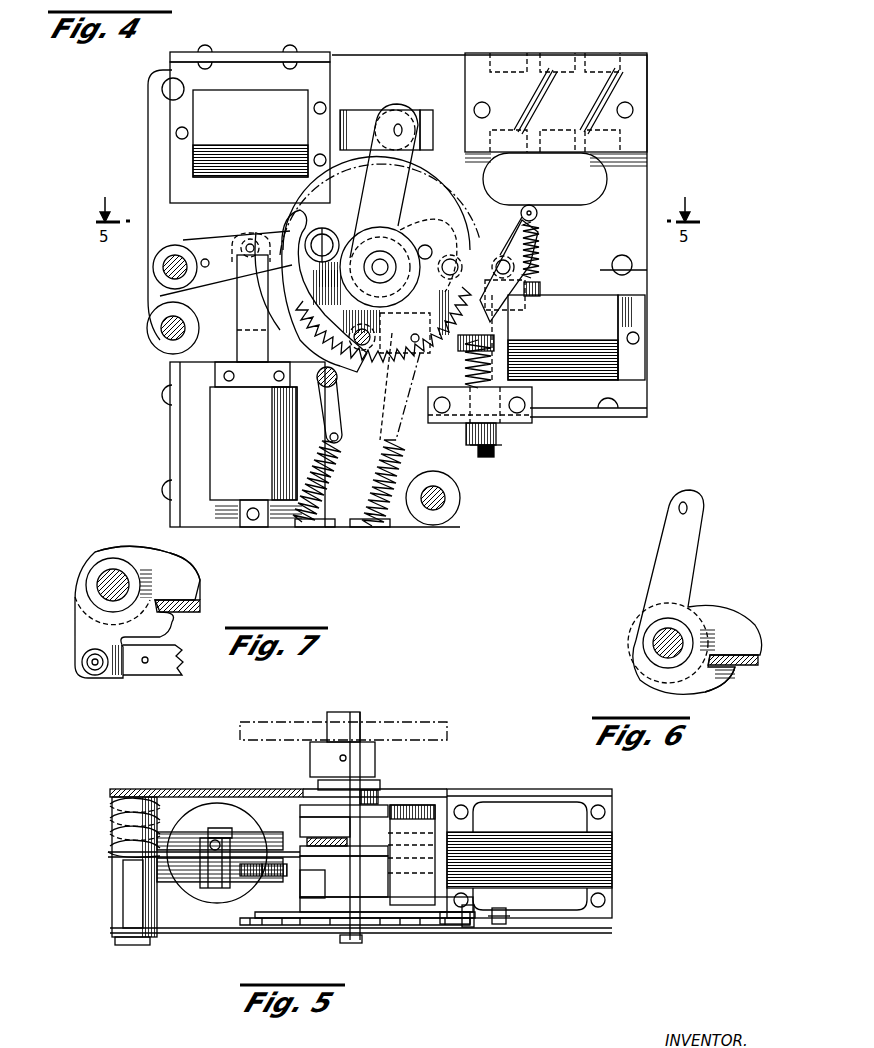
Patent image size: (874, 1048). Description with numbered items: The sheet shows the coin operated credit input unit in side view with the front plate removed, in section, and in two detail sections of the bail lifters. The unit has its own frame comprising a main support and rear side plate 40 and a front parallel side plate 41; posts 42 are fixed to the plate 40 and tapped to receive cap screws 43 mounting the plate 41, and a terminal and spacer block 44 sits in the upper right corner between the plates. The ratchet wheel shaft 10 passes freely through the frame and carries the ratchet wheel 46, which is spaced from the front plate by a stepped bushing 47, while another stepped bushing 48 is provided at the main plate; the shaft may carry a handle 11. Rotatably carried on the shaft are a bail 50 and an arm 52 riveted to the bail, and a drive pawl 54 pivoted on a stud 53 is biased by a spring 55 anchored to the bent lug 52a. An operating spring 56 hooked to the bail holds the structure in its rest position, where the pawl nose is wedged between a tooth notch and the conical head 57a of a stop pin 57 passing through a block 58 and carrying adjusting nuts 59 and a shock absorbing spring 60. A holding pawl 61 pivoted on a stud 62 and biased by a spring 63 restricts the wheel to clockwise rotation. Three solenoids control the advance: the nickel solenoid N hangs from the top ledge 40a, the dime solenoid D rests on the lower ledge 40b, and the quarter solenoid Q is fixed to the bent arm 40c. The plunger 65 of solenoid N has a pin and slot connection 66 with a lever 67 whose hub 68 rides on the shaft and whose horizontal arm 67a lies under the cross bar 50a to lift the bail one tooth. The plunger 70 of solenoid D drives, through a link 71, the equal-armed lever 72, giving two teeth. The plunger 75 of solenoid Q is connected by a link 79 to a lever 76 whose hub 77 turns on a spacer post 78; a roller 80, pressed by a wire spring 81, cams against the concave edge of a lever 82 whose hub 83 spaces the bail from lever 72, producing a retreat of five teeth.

In FIG. 4, the ratchet wheel shaft 10 is at (383, 264).
In FIG. 7, the ratchet wheel shaft 10 is at (98, 585).
In FIG. 6, the ratchet wheel shaft 10 is at (652, 640).
In FIG. 5, the ratchet wheel shaft 10 is at (351, 714).
In FIG. 5, the handle 11 is at (422, 725).
In FIG. 4, the main support and rear side plate 40 is at (446, 55).
In FIG. 5, the main support and rear side plate 40 is at (172, 788).
In FIG. 4, the horizontally bent top ledge portion 40a is at (236, 52).
In FIG. 4, the horizontally bent lower ledge 40b is at (577, 418).
In FIG. 4, the vertical right angularly bent arm 40c is at (173, 421).
In FIG. 5, the front parallel side plate 41 is at (576, 934).
In FIG. 4, the posts 42 is at (166, 336).
In FIG. 5, the posts 42 is at (112, 921).
In FIG. 5, the cap screws 43 is at (123, 941).
In FIG. 4, the terminal and spacer block 44 is at (640, 95).
In FIG. 4, the ratchet wheel 46 is at (380, 358).
In FIG. 5, the ratchet wheel 46 is at (262, 926).
In FIG. 5, the stepped bushing 47 is at (328, 922).
In FIG. 5, the stepped bushing 48 is at (379, 797).
In FIG. 4, the bail 50 is at (450, 214).
In FIG. 7, the bail 50 is at (185, 572).
In FIG. 6, the bail 50 is at (706, 606).
In FIG. 5, the bail 50 is at (407, 804).
In FIG. 7, the cross bar 50a is at (194, 606).
In FIG. 6, the cross bar 50a is at (746, 660).
In FIG. 4, the arm 52 is at (495, 240).
In FIG. 5, the arm 52 is at (374, 914).
In FIG. 4, the bent lug 52a is at (542, 289).
In FIG. 4, the stud 53 is at (512, 267).
In FIG. 5, the stud 53 is at (468, 928).
In FIG. 4, the drive pawl 54 is at (534, 210).
In FIG. 5, the drive pawl 54 is at (456, 926).
In FIG. 4, the spring 55 is at (540, 234).
In FIG. 5, the spring 55 is at (500, 925).
In FIG. 4, the operating spring 56 is at (408, 432).
In FIG. 4, the stop pin 57 is at (490, 458).
In FIG. 4, the conical head 57a is at (494, 337).
In FIG. 4, the block 58 is at (532, 395).
In FIG. 4, the nuts 59 is at (496, 432).
In FIG. 4, the shock absorbing spring 60 is at (492, 356).
In FIG. 4, the holding pawl 61 is at (333, 418).
In FIG. 4, the stud 62 is at (324, 384).
In FIG. 4, the spring 63 is at (332, 460).
In FIG. 4, the plunger 65 is at (357, 110).
In FIG. 4, the pin and slot connection 66 is at (400, 124).
In FIG. 4, the lever 67 is at (414, 160).
In FIG. 6, the lever 67 is at (651, 586).
In FIG. 5, the lever 67 is at (305, 840).
In FIG. 6, the horizontal arm 67a is at (726, 680).
In FIG. 5, the hub 68 is at (318, 818).
In FIG. 4, the plunger 70 is at (405, 376).
In FIG. 7, the plunger 70 is at (171, 674).
In FIG. 7, the link 71 is at (118, 681).
In FIG. 4, the lever 72 is at (325, 338).
In FIG. 7, the lever 72 is at (77, 632).
In FIG. 5, the lever 72 is at (300, 835).
In FIG. 4, the plunger 75 is at (237, 340).
In FIG. 5, the plunger 75 is at (205, 867).
In FIG. 4, the lever 76 is at (186, 244).
In FIG. 5, the lever 76 is at (112, 857).
In FIG. 5, the hub 77 is at (110, 812).
In FIG. 4, the spacer post 78 is at (166, 272).
In FIG. 5, the spacer post 78 is at (126, 880).
In FIG. 4, the link 79 is at (244, 290).
In FIG. 5, the link 79 is at (210, 838).
In FIG. 4, the roller 80 is at (333, 230).
In FIG. 5, the roller 80 is at (272, 878).
In FIG. 5, the wire spring 81 is at (110, 840).
In FIG. 4, the lever 82 is at (345, 312).
In FIG. 5, the lever 82 is at (250, 875).
In FIG. 5, the hub 83 is at (315, 890).
In FIG. 4, the nickel solenoid N is at (200, 118).
In FIG. 4, the quarter solenoid Q is at (212, 455).
In FIG. 5, the quarter solenoid Q is at (218, 812).
In FIG. 4, the dime solenoid D is at (612, 315).
In FIG. 5, the dime solenoid D is at (580, 825).